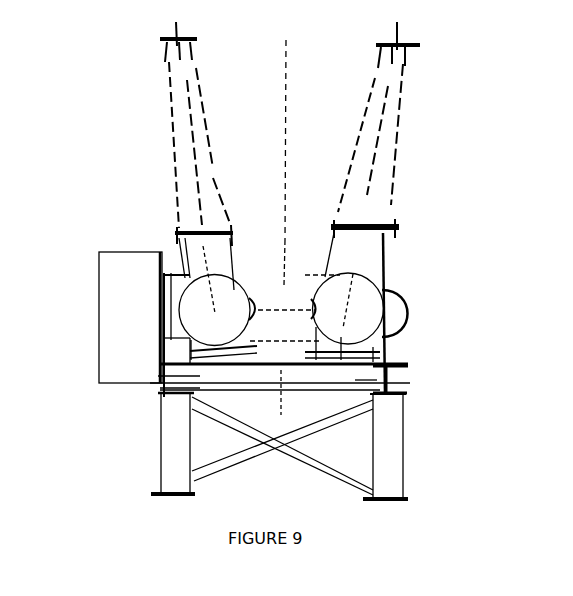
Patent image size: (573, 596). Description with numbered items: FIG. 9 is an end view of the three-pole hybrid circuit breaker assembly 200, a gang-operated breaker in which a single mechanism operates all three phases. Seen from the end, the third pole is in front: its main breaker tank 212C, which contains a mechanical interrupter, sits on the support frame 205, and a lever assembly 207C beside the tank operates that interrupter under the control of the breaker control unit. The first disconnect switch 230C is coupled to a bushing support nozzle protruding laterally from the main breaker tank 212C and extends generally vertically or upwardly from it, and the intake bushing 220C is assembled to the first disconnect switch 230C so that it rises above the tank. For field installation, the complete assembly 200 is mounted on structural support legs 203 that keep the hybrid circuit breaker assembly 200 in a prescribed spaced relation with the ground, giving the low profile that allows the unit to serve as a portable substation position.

The 3-pole hybrid circuit breaker assembly 200 is at (309, 34).
The structural support legs 203 is at (395, 442).
The support frame 205 is at (388, 377).
The lever assembly 207C is at (128, 258).
The main breaker tank 212C is at (258, 275).
The intake bushing 220C is at (206, 147).
The first disconnect switch 230C is at (238, 244).